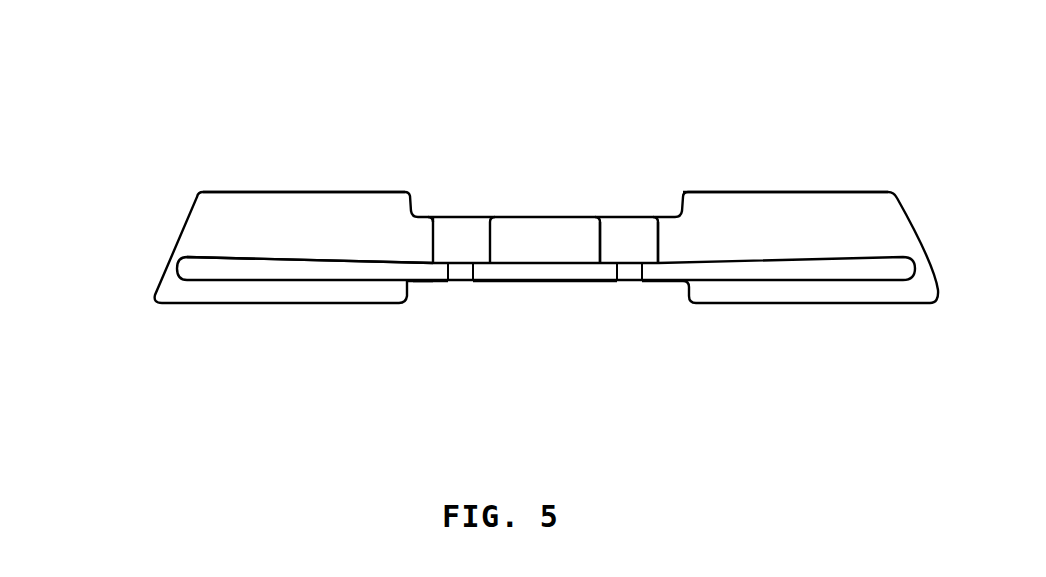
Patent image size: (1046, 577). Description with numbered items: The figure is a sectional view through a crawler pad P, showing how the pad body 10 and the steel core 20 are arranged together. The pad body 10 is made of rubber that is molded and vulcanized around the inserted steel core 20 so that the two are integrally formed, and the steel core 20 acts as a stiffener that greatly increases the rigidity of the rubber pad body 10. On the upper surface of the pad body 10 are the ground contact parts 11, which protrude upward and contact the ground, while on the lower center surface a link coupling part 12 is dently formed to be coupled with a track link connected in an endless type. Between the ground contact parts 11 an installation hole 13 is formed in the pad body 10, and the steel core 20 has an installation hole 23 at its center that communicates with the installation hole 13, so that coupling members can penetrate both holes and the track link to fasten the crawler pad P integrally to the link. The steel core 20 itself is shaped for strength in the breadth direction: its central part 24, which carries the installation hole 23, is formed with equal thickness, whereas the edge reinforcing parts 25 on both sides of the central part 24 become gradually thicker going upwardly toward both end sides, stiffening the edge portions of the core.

The pad body 10 is at (314, 293).
The ground contact part 11 is at (307, 192).
The link coupling part 12 is at (540, 290).
The installation hole 13 is at (632, 235).
The steel core 20 is at (738, 270).
The installation hole 23 is at (459, 268).
The central part 24 is at (544, 248).
The edge reinforcing part 25 is at (232, 259).
The crawler pad P is at (413, 150).